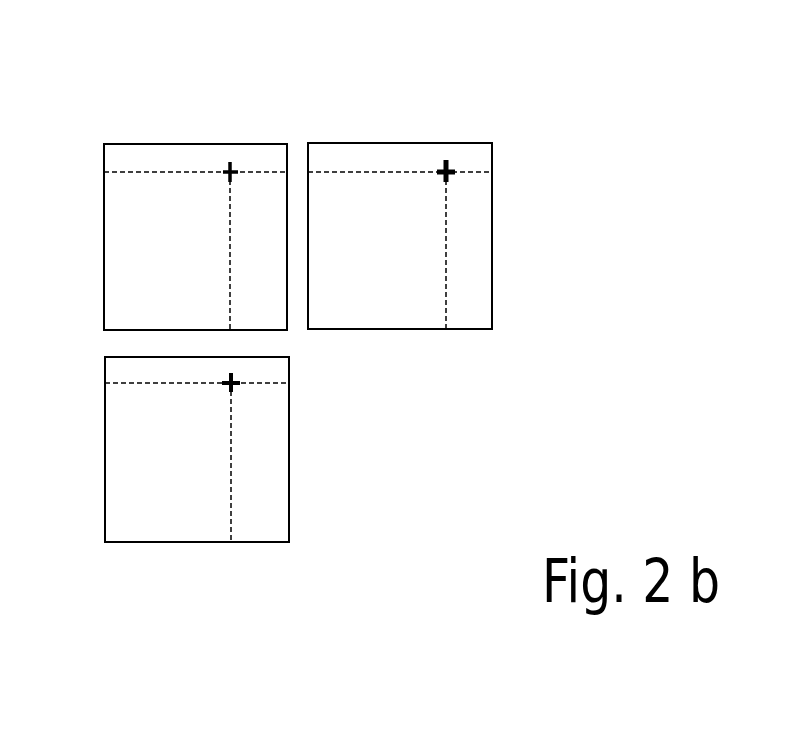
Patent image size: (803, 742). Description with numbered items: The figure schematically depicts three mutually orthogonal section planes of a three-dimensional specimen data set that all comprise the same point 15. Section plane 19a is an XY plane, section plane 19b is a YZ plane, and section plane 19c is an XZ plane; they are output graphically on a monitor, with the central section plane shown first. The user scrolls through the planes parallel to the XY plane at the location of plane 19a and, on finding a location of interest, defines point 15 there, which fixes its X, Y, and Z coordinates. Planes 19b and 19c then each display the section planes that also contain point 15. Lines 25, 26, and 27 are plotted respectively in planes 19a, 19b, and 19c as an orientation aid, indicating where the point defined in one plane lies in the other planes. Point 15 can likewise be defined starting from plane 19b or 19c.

The point 15 is at (230, 163).
The section plane 19a is at (187, 188).
The section plane 19b is at (463, 277).
The section plane 19c is at (135, 507).
The line 25 is at (140, 177).
The line 26 is at (230, 292).
The line 27 is at (446, 235).